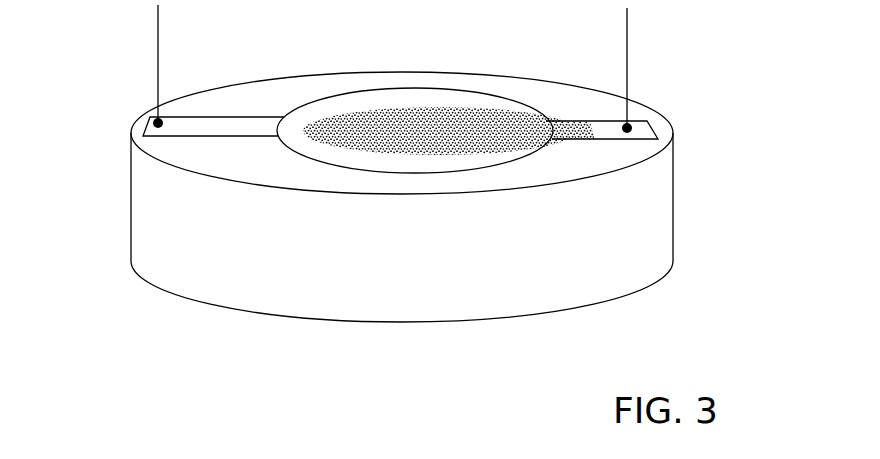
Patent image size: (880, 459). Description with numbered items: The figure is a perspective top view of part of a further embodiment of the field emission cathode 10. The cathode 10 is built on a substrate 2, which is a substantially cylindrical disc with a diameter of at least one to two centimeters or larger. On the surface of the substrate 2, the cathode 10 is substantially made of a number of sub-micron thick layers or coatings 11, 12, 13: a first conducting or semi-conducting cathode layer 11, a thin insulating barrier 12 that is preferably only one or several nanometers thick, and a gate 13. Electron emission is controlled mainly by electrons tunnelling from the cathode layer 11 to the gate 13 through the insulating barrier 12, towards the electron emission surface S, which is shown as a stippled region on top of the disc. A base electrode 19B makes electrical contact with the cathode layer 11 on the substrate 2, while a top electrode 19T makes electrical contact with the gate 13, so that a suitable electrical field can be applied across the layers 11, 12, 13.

The field emission cathode 10 is at (464, 197).
The substrate 2 is at (652, 200).
The cathode layer 11 is at (400, 250).
The insulating barrier 12 is at (400, 250).
The gate 13 is at (345, 170).
The electron emission surface S is at (383, 108).
The top electrode 19T is at (153, 120).
The base electrode 19B is at (631, 125).